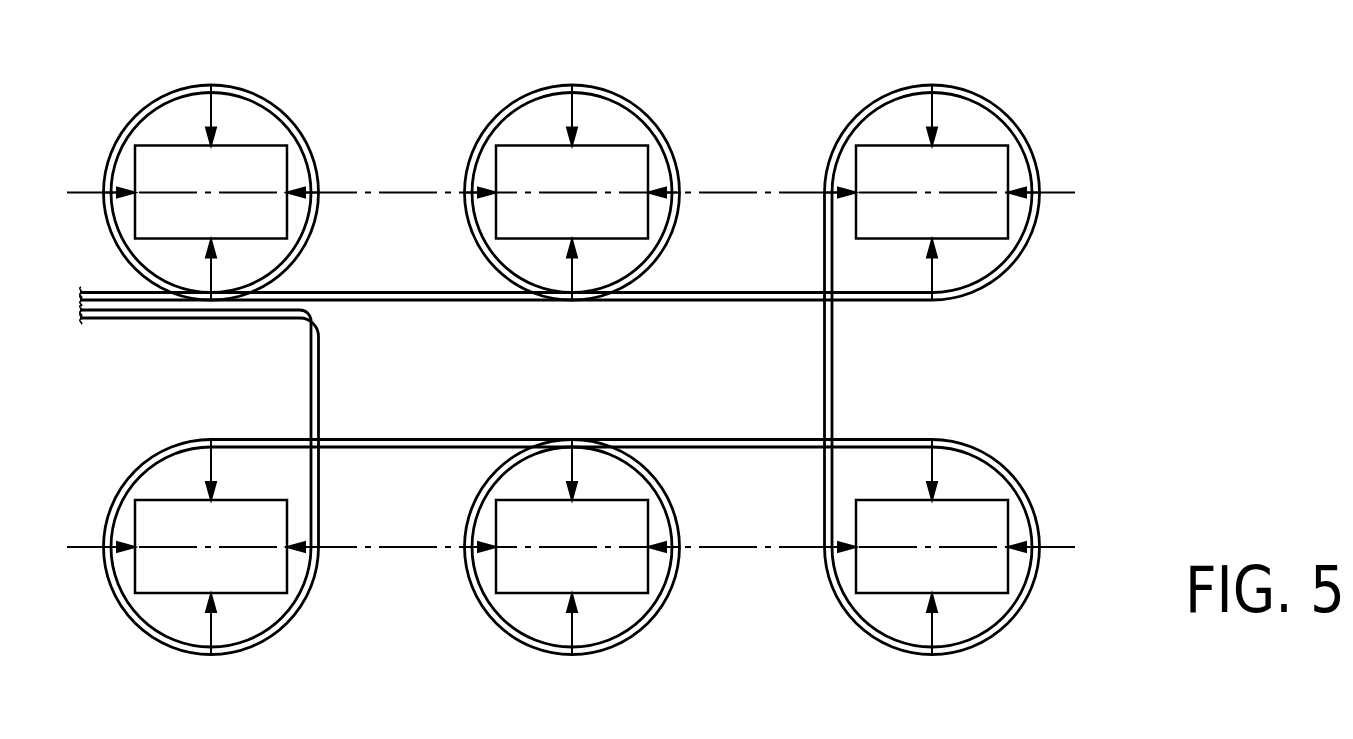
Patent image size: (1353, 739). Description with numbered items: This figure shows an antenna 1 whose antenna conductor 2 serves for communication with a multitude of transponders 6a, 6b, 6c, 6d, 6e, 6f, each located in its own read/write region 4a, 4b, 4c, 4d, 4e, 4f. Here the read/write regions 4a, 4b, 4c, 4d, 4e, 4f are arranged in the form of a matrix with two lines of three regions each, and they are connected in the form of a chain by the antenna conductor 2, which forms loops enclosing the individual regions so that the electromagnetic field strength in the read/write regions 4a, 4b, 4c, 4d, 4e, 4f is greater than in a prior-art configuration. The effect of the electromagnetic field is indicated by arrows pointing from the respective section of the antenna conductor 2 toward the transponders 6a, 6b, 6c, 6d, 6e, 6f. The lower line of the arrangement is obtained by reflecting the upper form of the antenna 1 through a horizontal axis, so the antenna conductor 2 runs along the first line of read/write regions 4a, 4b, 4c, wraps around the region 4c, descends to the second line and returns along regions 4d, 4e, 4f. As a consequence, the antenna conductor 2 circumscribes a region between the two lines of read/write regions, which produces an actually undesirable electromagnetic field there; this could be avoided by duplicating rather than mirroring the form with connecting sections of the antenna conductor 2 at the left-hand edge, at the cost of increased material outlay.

The antenna 1 is at (352, 150).
The antenna conductor 2 is at (325, 297).
The read/write region 4a is at (182, 260).
The read/write region 4b is at (542, 260).
The read/write region 4c is at (902, 260).
The read/write region 4d is at (902, 613).
The read/write region 4e is at (543, 613).
The read/write region 4f is at (182, 613).
The transponder 6a is at (230, 228).
The transponder 6b is at (590, 227).
The transponder 6c is at (948, 227).
The transponder 6d is at (950, 580).
The transponder 6e is at (590, 580).
The transponder 6f is at (230, 580).